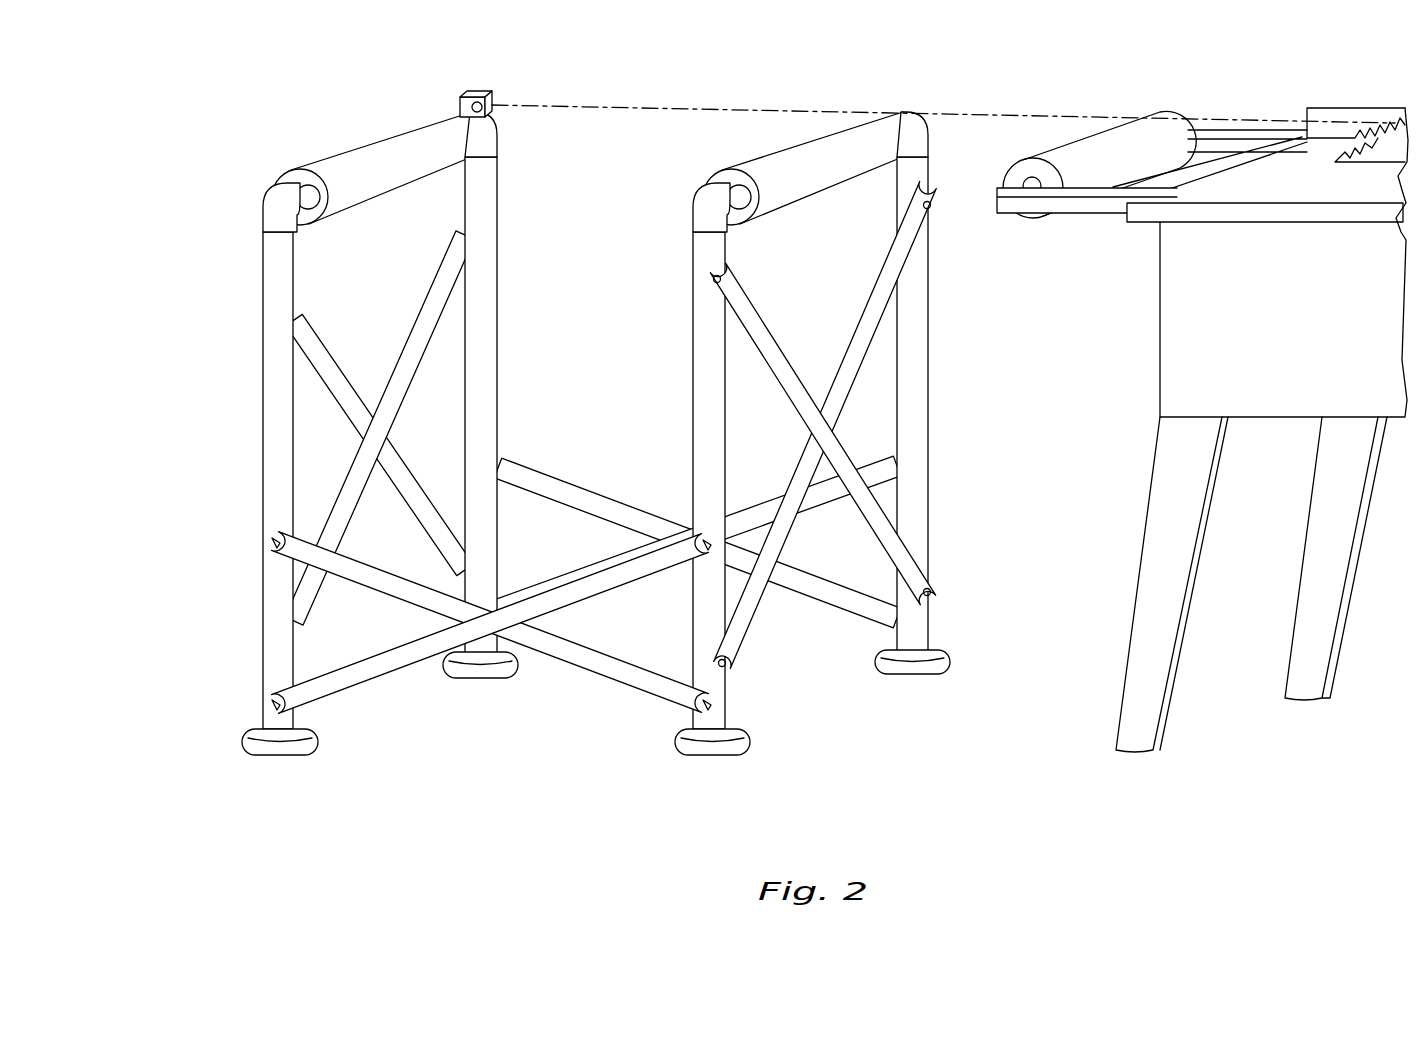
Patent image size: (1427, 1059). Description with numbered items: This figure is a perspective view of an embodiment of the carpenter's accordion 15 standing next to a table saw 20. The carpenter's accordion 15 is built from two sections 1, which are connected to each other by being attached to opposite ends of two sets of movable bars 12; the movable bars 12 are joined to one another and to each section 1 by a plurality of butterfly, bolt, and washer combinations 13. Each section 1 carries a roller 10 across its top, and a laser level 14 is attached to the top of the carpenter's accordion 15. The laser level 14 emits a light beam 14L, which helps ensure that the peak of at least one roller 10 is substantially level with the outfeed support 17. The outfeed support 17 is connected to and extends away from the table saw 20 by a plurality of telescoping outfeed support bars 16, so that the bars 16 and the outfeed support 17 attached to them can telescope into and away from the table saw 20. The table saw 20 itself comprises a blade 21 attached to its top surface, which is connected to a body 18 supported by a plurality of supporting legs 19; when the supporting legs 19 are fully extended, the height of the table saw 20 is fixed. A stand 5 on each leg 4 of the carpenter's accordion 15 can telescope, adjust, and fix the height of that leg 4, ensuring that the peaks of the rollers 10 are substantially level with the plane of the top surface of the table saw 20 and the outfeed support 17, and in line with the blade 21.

The section 1 is at (755, 415).
The leg 4 is at (912, 512).
The stand 5 is at (722, 757).
The roller 10 is at (808, 172).
The movable bar 12 is at (585, 480).
The butterfly, bolt, and washer combination 13 is at (272, 544).
The laser level 14 is at (470, 92).
The light beam 14L is at (722, 106).
The carpenter's accordion 15 is at (222, 150).
The telescoping outfeed support bar 16 is at (1100, 222).
The outfeed support 17 is at (1117, 155).
The body 18 is at (1173, 345).
The supporting leg 19 is at (1165, 495).
The table saw 20 is at (1204, 115).
The blade 21 is at (1365, 150).